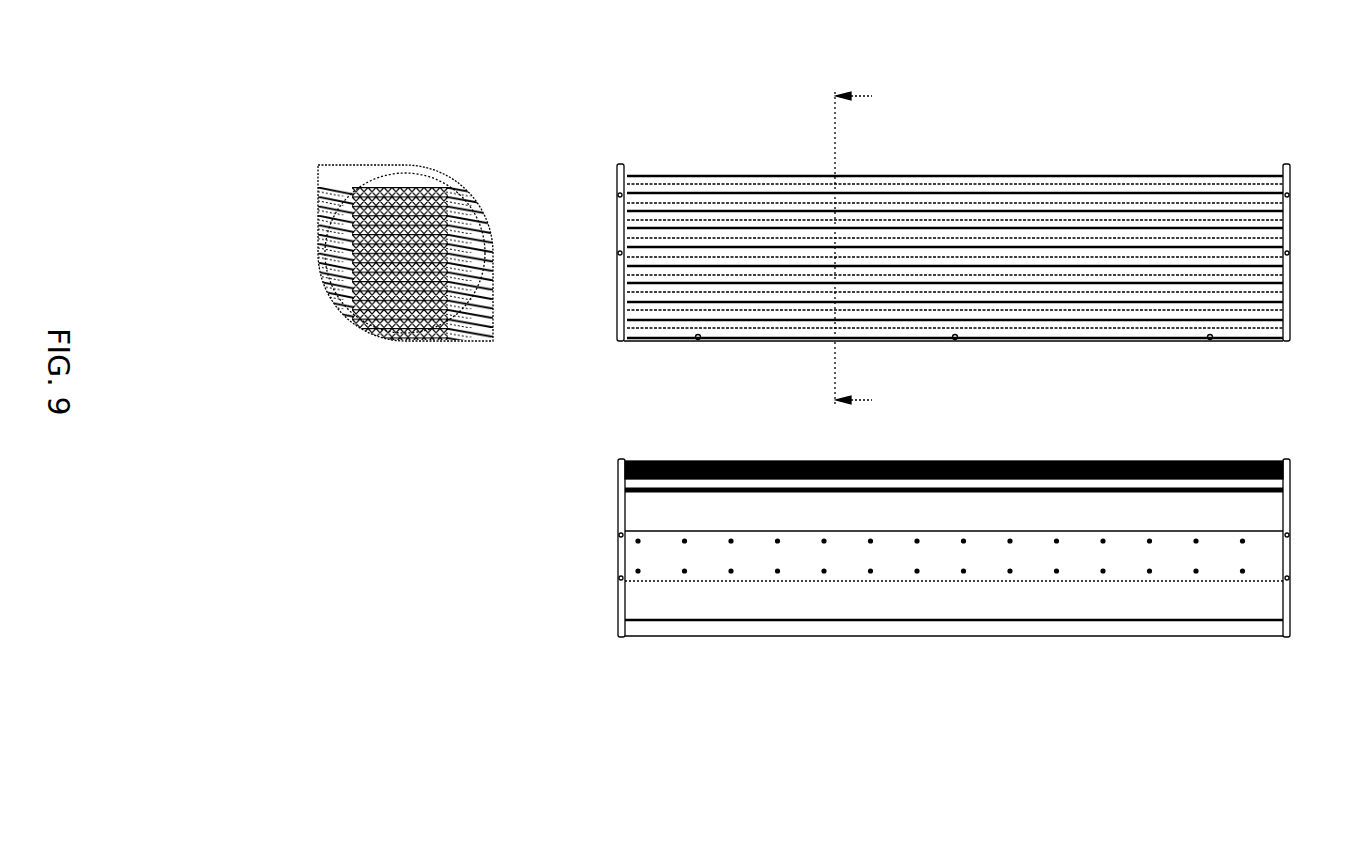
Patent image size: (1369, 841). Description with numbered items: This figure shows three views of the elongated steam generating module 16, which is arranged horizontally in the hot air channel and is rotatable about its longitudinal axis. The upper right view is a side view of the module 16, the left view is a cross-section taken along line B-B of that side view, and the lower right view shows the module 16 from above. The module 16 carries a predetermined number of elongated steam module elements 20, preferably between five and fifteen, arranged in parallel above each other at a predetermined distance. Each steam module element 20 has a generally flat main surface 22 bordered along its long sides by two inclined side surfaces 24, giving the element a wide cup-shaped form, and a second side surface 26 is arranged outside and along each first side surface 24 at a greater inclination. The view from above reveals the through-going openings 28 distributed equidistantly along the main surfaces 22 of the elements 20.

The steam generating module 16 is at (465, 133).
The steam module element 20 is at (377, 192).
The main surface 22 is at (1172, 570).
The side surface 24 is at (462, 292).
The second side surface 26 is at (478, 285).
The through-going openings 28 is at (963, 572).